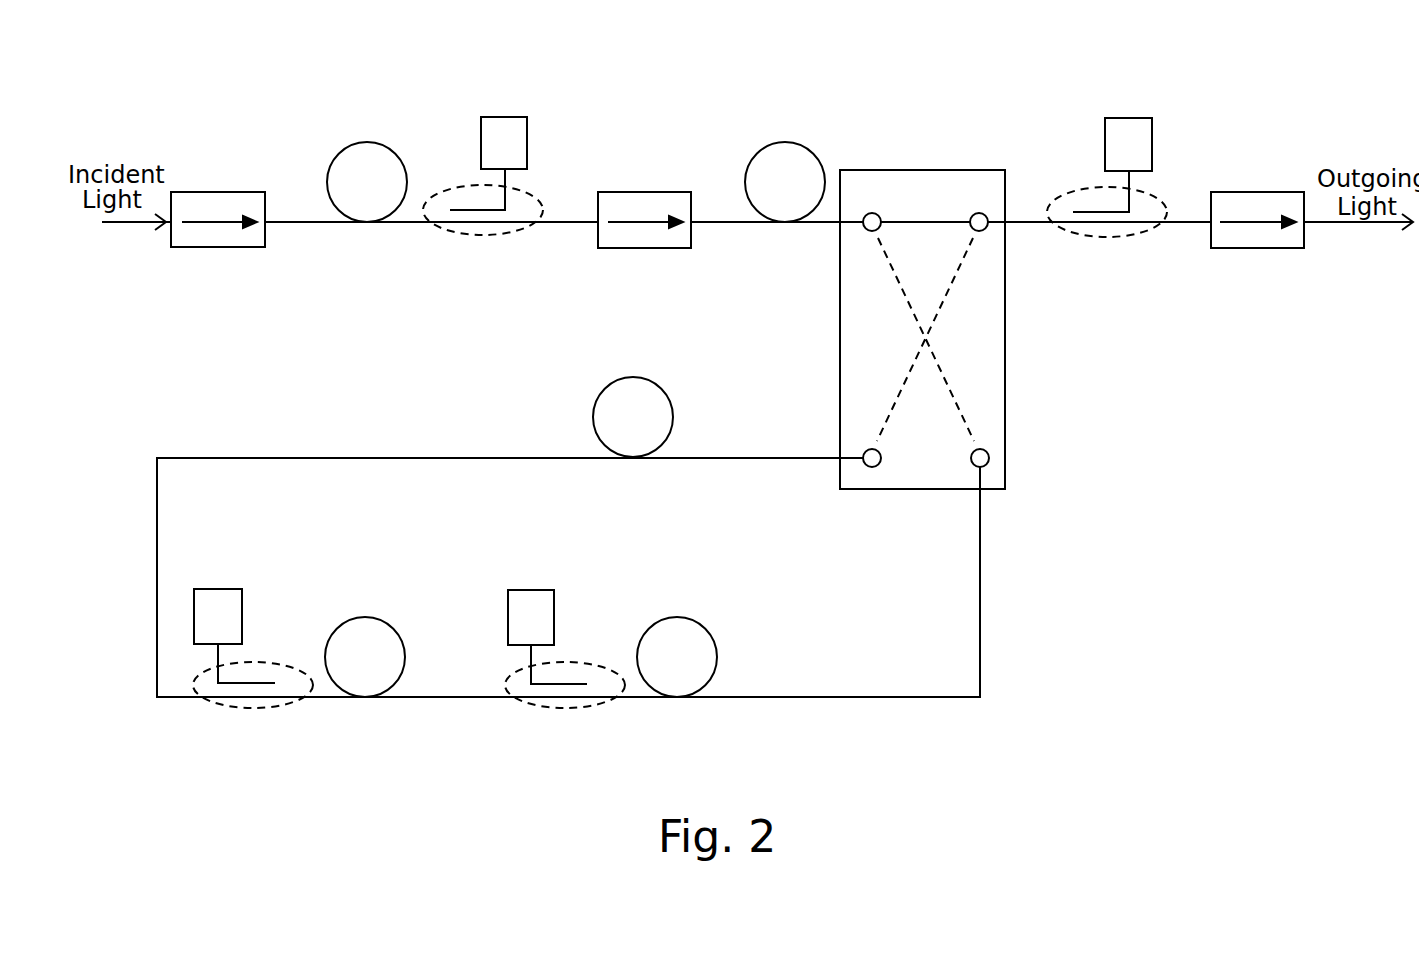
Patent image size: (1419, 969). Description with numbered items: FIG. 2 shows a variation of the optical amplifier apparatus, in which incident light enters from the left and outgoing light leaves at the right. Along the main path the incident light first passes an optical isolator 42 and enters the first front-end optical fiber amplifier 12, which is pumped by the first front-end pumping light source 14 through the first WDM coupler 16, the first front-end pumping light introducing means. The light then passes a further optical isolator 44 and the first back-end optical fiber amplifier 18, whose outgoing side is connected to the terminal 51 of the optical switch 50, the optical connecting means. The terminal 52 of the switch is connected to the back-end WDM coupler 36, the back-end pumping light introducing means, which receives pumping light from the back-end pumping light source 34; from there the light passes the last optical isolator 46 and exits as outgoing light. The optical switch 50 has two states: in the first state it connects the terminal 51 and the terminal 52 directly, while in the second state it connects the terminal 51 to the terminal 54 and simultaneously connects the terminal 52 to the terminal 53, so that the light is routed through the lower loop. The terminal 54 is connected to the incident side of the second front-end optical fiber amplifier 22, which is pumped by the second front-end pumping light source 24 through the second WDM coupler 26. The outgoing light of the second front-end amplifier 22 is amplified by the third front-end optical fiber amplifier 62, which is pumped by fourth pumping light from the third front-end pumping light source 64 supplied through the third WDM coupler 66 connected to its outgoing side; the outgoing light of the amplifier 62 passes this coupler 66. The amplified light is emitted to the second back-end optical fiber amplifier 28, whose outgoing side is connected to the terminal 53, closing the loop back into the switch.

The first front-end optical fiber amplifier 12 is at (377, 142).
The first front-end pumping light source 14 is at (505, 117).
The first WDM coupler 16 is at (533, 197).
The first back-end optical fiber amplifier 18 is at (785, 142).
The second front-end optical fiber amplifier 22 is at (688, 617).
The second front-end pumping light source 24 is at (533, 590).
The second WDM coupler 26 is at (575, 660).
The second back-end optical fiber amplifier 28 is at (593, 420).
The back-end pumping light source 34 is at (1130, 118).
The back-end WDM coupler 36 is at (1095, 190).
The optical isolator 42 is at (220, 192).
The optical isolator 44 is at (645, 192).
The optical isolator 46 is at (1258, 192).
The optical switch 50 is at (840, 327).
The terminal 51 is at (875, 213).
The terminal 52 is at (982, 213).
The terminal 53 is at (868, 467).
The terminal 54 is at (977, 467).
The third front-end optical fiber amplifier 62 is at (377, 617).
The third front-end pumping light source 64 is at (220, 589).
The third WDM coupler 66 is at (265, 660).